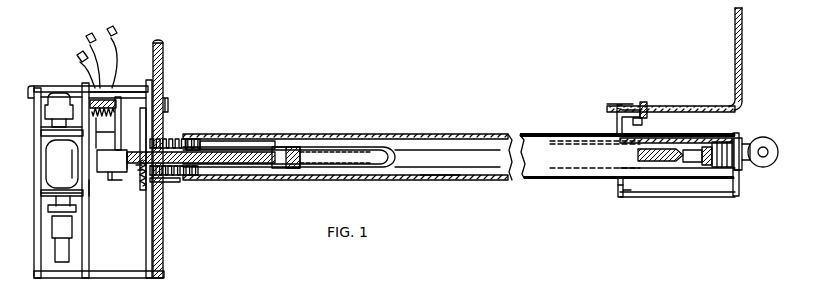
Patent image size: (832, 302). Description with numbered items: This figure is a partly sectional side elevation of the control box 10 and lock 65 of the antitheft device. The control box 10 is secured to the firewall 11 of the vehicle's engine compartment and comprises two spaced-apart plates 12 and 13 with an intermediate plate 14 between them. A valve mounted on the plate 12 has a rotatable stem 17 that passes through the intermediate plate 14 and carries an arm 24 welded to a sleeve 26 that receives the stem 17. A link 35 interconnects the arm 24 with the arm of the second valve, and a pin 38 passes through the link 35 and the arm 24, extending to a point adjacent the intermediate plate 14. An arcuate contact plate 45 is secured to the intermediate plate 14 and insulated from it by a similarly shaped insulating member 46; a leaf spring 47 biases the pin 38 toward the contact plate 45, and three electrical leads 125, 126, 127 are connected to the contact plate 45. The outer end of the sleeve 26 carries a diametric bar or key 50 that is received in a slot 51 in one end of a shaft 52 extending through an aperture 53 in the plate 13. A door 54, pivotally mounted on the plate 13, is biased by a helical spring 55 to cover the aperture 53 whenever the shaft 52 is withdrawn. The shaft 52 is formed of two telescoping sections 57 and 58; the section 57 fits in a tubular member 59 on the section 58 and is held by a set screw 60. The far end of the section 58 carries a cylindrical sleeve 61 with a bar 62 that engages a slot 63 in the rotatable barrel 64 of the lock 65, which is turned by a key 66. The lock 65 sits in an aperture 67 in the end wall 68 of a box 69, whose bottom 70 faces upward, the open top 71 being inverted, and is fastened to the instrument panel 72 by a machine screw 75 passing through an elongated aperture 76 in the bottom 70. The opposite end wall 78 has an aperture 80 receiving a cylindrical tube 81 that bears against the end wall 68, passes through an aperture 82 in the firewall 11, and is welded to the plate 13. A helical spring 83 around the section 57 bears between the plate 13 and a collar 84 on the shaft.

The control box 10 is at (78, 80).
The firewall 11 is at (164, 262).
The plate 12 is at (38, 197).
The plate 13 is at (147, 222).
The intermediate plate 14 is at (90, 200).
The rotatable stem 17 is at (70, 193).
The arm 24 is at (138, 128).
The sleeve 26 is at (90, 188).
The link 35 is at (128, 90).
The pin 38 is at (116, 108).
The arcuate contact plate 45 is at (100, 140).
The member of insulating material 46 is at (80, 149).
The leaf spring 47 is at (96, 130).
The diametric bar or key 50 is at (113, 181).
The slot 51 is at (141, 145).
The shaft 52 is at (190, 177).
The aperture 53 is at (160, 180).
The door 54 is at (150, 200).
The helical spring 55 is at (139, 188).
The telescoping section 57 is at (262, 150).
The telescoping section 58 is at (428, 150).
The tubular member 59 is at (352, 147).
The set screw 60 is at (288, 146).
The cylindrical sleeve 61 is at (688, 148).
The bar 62 is at (694, 163).
The slot 63 is at (708, 166).
The rotatable barrel 64 is at (722, 142).
The lock 65 is at (742, 176).
The key 66 is at (778, 144).
The aperture 67 is at (740, 138).
The end wall 68 is at (742, 104).
The box 69 is at (617, 196).
The bottom 70 is at (617, 116).
The open top 71 is at (627, 192).
The instrument panel 72 is at (690, 106).
The machine screw 75 is at (642, 102).
The elongated aperture 76 is at (642, 120).
The end wall 78 is at (618, 185).
The aperture 80 is at (618, 138).
The cylindrical tube 81 is at (422, 177).
The aperture 82 is at (160, 138).
The helical spring 83 is at (190, 140).
The collar 84 is at (225, 141).
The electrical lead 125 is at (80, 56).
The electrical lead 126 is at (89, 36).
The electrical lead 127 is at (110, 31).